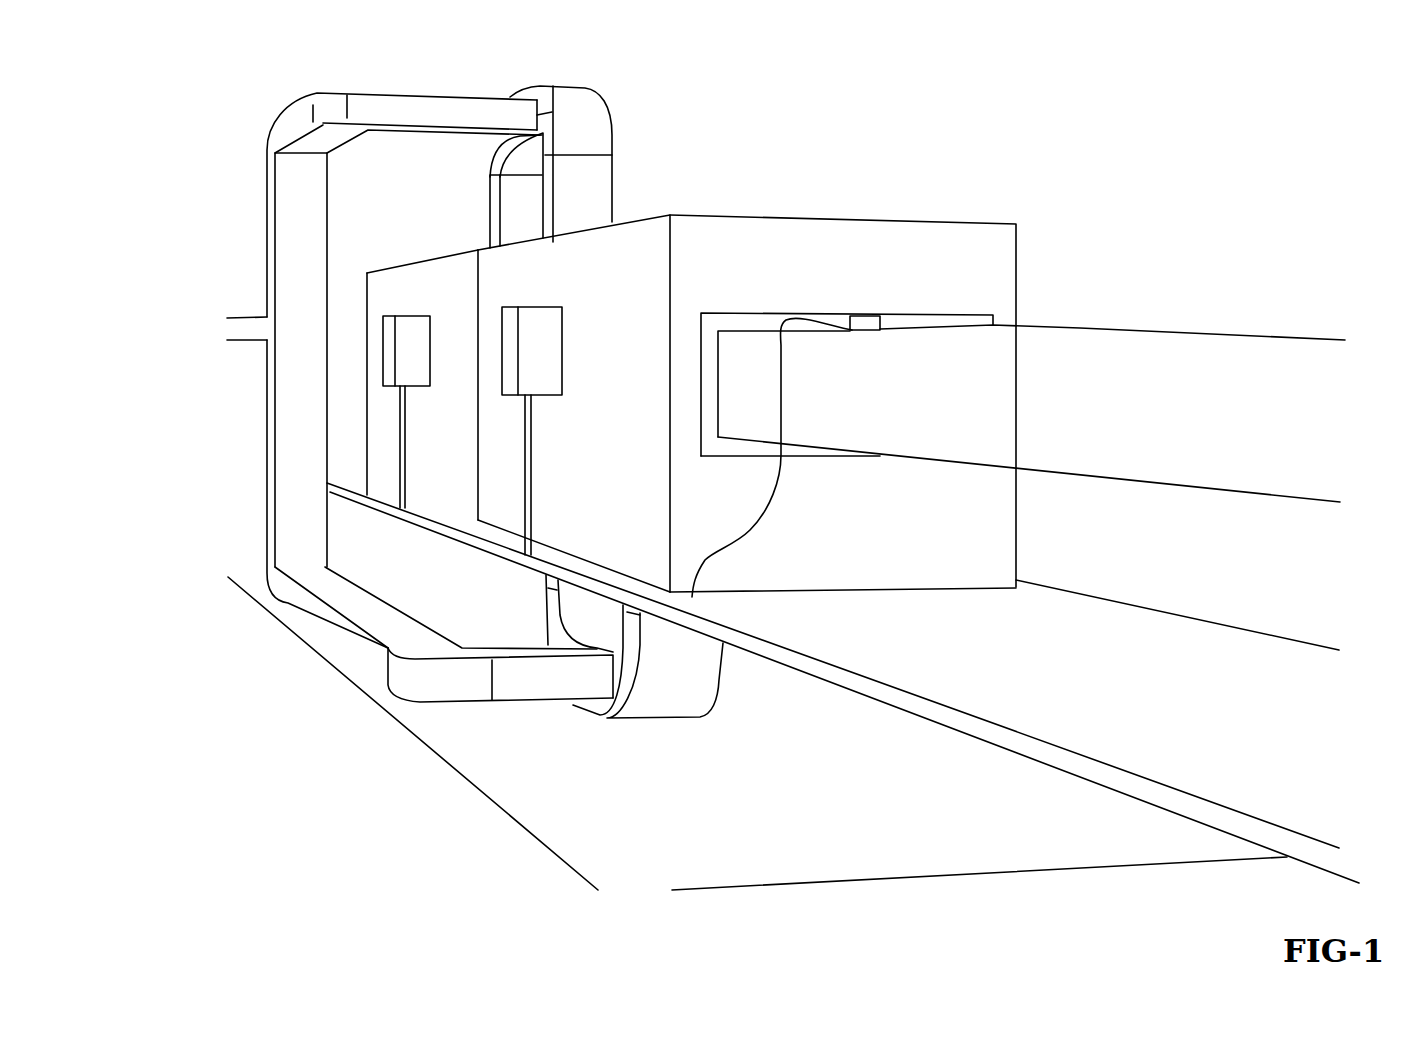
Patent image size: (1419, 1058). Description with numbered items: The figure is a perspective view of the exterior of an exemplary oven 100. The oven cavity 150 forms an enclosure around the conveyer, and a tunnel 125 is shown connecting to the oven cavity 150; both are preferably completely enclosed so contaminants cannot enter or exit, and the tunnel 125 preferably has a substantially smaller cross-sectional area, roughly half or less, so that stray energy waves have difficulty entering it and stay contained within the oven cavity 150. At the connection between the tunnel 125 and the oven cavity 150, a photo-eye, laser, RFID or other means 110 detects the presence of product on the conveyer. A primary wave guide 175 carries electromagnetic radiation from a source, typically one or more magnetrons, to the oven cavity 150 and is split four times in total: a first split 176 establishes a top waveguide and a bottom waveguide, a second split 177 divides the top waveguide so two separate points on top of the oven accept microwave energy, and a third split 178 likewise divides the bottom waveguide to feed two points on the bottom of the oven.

The oven 100 is at (1020, 176).
The means for detecting the presence of product 110 is at (866, 317).
The tunnel 125 is at (1165, 358).
The oven cavity 150 is at (1000, 283).
The primary wave guide 175 is at (250, 340).
The first split 176 is at (267, 317).
The second split 177 is at (596, 101).
The third split 178 is at (615, 668).